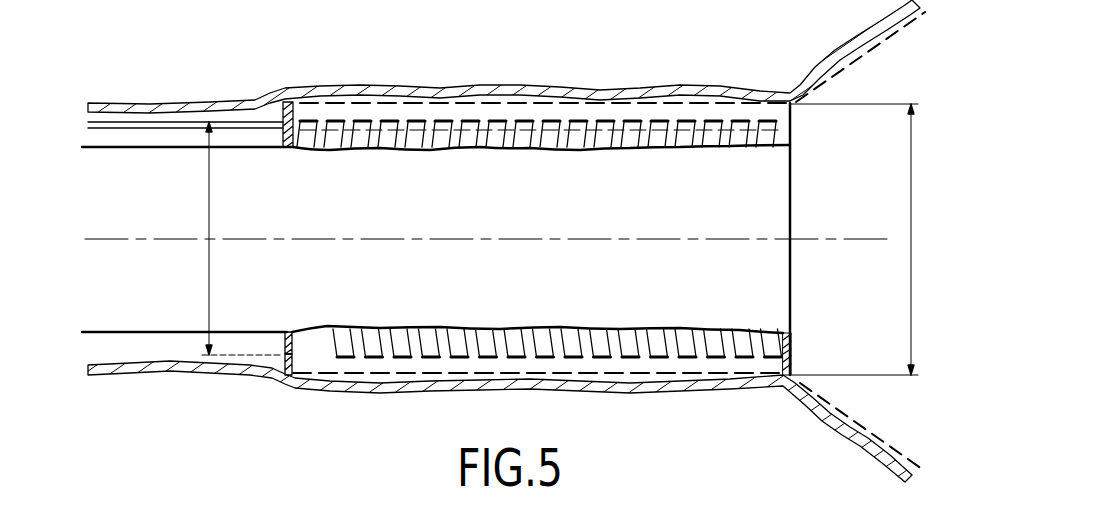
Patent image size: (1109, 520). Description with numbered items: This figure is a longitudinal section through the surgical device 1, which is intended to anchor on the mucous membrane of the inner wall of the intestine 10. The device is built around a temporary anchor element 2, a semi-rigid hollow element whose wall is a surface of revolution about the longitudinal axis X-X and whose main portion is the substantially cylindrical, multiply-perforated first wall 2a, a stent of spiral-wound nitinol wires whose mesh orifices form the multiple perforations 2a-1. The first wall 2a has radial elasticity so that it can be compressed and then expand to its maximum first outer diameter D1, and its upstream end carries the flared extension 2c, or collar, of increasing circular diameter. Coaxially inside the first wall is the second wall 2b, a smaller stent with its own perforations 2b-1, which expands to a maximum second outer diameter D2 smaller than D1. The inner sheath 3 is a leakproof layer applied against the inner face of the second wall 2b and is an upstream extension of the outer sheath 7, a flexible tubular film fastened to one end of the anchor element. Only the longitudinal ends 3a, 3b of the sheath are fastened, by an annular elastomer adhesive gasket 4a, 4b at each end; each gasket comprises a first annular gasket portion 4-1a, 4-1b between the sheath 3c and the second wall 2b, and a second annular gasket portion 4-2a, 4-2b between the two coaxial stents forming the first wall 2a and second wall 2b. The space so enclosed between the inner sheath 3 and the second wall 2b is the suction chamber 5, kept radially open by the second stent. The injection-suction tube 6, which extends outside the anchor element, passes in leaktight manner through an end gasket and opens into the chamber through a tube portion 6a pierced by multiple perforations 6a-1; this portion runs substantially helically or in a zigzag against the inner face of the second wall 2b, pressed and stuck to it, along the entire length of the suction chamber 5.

The surgical device 1 is at (885, 426).
The temporary anchor element 2 is at (892, 47).
The first wall 2a is at (553, 105).
The multiple perforations 2a-1 is at (587, 377).
The second wall 2b is at (640, 122).
The perforations of second wall 2b-1 is at (390, 360).
The flared extension 2c is at (925, 390).
The inner sheath 3 is at (541, 174).
The sheath 3c is at (535, 150).
The upstream longitudinal end of inner sheath 3a is at (780, 332).
The downstream longitudinal end of inner sheath 3b is at (290, 149).
The annular elastomer adhesive gasket 4a is at (842, 337).
The first annular gasket portion 4-1a is at (790, 338).
The second annular gasket portion 4-2a is at (820, 356).
The annular elastomer adhesive gasket 4b is at (244, 415).
The first annular gasket portion 4-1b is at (285, 343).
The second annular gasket portion 4-2b is at (282, 396).
The suction chamber 5 is at (713, 128).
The injection-suction tube 6 is at (135, 110).
The tube portion 6a is at (375, 133).
The multiple perforations 6a-1 is at (433, 150).
The outer sheath 7 is at (141, 331).
The intestine 10 is at (622, 387).
The maximum first outer diameter D1 is at (867, 239).
The maximum second outer diameter D2 is at (229, 238).
The longitudinal axis X-X is at (118, 238).